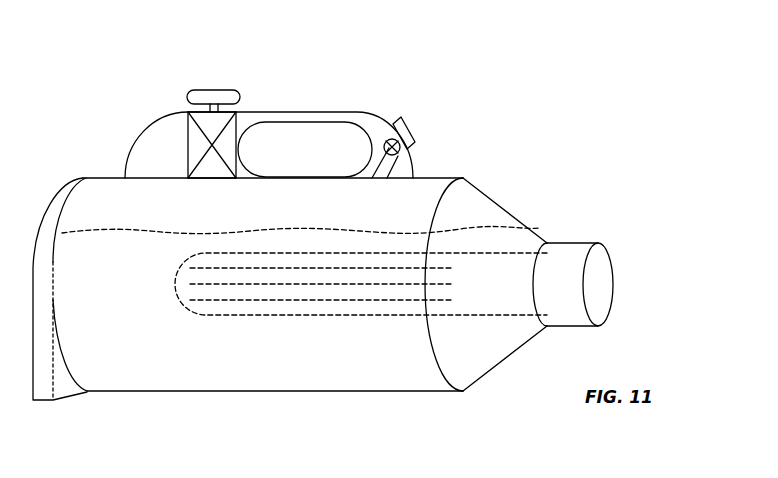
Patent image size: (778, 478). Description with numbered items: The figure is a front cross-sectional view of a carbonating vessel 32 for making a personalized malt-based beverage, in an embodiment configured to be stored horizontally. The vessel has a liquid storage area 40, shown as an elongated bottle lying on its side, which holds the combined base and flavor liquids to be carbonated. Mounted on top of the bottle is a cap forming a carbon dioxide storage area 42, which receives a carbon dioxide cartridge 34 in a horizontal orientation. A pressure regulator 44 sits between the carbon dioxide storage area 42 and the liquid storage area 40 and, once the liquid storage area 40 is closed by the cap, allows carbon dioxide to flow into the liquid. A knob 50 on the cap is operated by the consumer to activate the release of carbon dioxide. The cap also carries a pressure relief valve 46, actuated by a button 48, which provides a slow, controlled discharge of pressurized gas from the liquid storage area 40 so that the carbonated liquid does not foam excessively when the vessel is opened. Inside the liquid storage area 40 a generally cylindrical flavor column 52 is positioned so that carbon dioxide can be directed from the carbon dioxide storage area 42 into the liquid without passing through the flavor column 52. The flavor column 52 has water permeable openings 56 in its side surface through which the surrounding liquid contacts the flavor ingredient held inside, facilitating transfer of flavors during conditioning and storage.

The carbonating vessel 32 is at (71, 95).
The carbon dioxide cartridge 34 is at (313, 121).
The liquid storage area 40 is at (204, 389).
The carbon dioxide storage area 42 is at (341, 96).
The pressure regulator 44 is at (195, 145).
The pressure relief valve 46 is at (409, 153).
The button 48 is at (399, 136).
The knob 50 is at (242, 96).
The flavor column 52 is at (484, 302).
The water permeable openings 56 is at (312, 304).